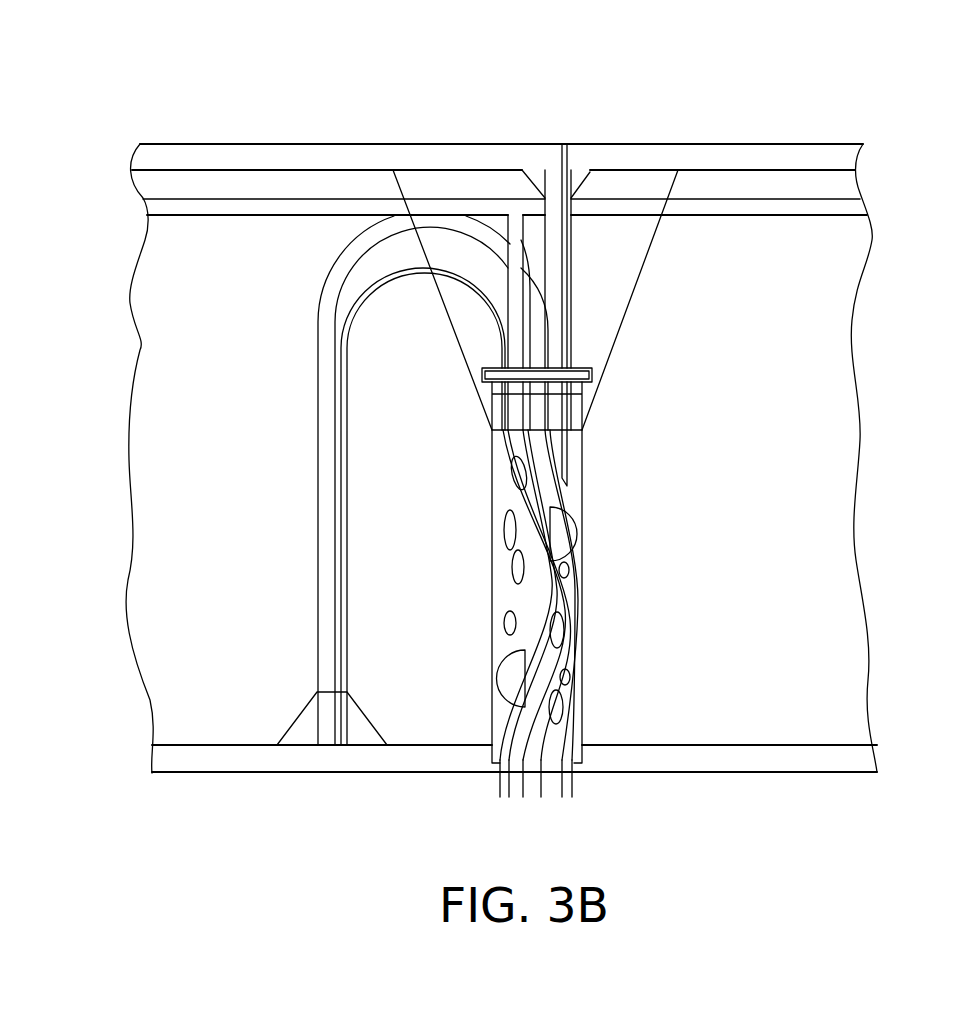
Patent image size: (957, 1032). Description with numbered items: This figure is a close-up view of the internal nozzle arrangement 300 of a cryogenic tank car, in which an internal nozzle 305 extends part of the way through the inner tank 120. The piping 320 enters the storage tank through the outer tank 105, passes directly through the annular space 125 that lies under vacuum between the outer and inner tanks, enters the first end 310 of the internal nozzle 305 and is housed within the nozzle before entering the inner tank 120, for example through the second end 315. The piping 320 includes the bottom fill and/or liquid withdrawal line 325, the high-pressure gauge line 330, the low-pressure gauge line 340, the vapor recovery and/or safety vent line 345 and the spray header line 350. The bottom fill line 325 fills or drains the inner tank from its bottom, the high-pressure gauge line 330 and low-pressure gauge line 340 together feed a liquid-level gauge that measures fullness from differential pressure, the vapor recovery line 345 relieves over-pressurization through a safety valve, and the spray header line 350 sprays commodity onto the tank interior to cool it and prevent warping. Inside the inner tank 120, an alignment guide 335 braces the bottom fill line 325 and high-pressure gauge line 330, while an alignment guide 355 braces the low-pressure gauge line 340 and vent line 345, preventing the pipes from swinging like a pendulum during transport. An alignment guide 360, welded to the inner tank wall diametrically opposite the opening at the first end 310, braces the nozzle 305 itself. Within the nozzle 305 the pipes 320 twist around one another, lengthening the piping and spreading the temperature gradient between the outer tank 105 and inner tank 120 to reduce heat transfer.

The cable routing assembly 300 is at (400, 62).
The outer tank 105 is at (723, 144).
The annular space 125 is at (795, 167).
The inner tank 120 is at (817, 172).
The spray header line 350 is at (800, 217).
The alignment guide 355 is at (590, 181).
The vapor recovery and/or safety vent line 345 is at (573, 258).
The low-pressure gauge line 340 is at (553, 323).
The bottom fill and/or liquid withdrawal line 325 is at (323, 303).
The high-pressure gauge line 330 is at (413, 275).
The second end 315 is at (598, 352).
The alignment guide 360 is at (596, 388).
The internal nozzle 305 is at (585, 527).
The piping 320 is at (575, 621).
The first end 310 is at (574, 767).
The alignment guide 335 is at (297, 717).